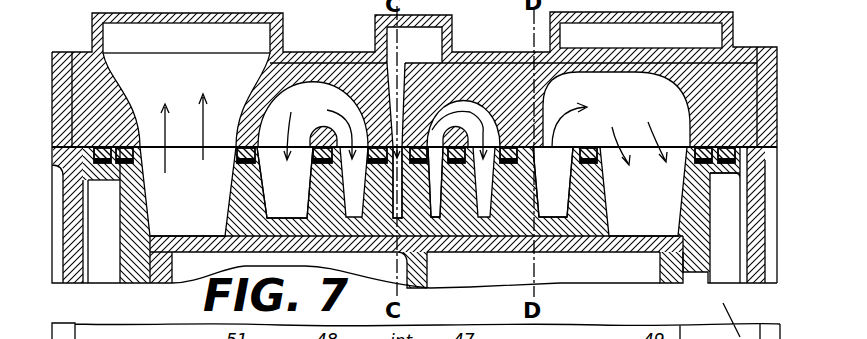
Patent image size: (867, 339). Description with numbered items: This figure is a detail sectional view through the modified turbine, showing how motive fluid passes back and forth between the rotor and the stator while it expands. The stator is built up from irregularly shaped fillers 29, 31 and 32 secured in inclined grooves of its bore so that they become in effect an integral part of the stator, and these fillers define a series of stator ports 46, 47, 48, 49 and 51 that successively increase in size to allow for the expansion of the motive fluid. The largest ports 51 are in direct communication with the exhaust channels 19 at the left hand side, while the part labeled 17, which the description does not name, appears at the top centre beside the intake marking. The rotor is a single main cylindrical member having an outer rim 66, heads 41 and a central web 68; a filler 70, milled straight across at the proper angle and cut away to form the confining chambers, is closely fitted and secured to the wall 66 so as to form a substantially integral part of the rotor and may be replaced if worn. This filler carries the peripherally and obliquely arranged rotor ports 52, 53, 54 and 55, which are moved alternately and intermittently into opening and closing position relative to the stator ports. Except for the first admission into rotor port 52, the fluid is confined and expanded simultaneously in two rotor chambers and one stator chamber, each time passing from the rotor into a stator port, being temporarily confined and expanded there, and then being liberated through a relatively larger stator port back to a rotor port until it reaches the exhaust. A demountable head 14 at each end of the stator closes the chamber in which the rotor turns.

The demountable head 14 is at (77, 240).
The intake manifold 17 is at (430, 52).
The exhaust channel 19 is at (412, 38).
The filler 29 is at (731, 62).
The filler 31 is at (291, 72).
The filler 32 is at (87, 78).
The rotor head 41 is at (158, 267).
The stator port 46 is at (390, 88).
The stator port 47 is at (463, 130).
The stator port 48 is at (433, 169).
The stator port 49 is at (616, 118).
The stator port 51 is at (186, 113).
The rotor port 52 is at (398, 183).
The rotor port 53 is at (433, 169).
The rotor port 54 is at (415, 182).
The rotor port 55 is at (413, 191).
The outer rim 66 is at (586, 247).
The central web 68 is at (397, 263).
The filler 70 is at (463, 229).